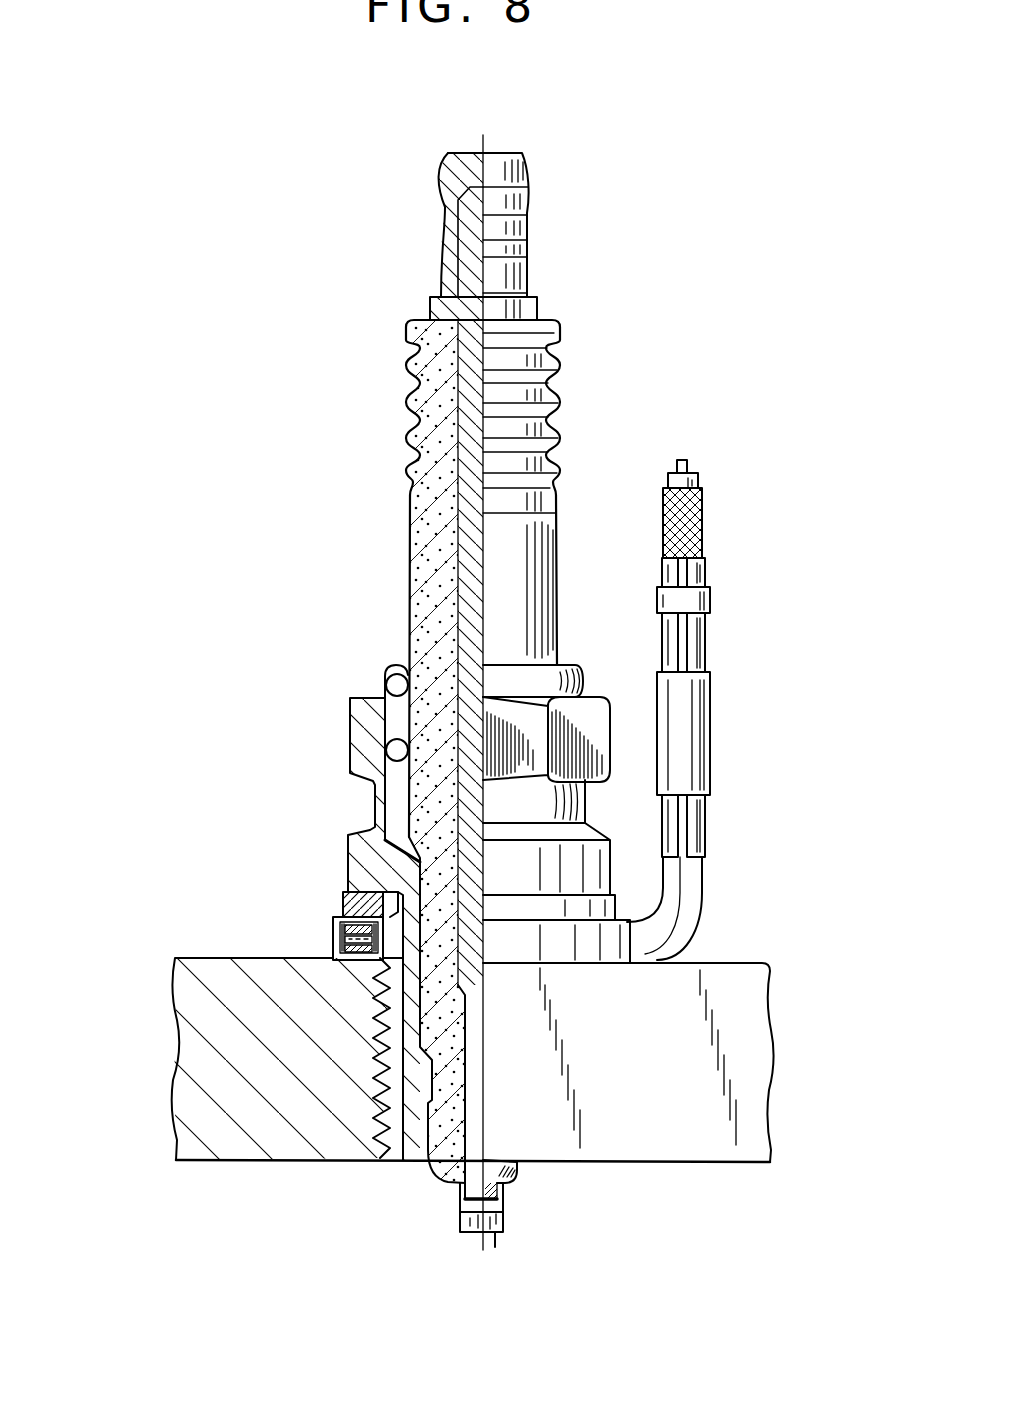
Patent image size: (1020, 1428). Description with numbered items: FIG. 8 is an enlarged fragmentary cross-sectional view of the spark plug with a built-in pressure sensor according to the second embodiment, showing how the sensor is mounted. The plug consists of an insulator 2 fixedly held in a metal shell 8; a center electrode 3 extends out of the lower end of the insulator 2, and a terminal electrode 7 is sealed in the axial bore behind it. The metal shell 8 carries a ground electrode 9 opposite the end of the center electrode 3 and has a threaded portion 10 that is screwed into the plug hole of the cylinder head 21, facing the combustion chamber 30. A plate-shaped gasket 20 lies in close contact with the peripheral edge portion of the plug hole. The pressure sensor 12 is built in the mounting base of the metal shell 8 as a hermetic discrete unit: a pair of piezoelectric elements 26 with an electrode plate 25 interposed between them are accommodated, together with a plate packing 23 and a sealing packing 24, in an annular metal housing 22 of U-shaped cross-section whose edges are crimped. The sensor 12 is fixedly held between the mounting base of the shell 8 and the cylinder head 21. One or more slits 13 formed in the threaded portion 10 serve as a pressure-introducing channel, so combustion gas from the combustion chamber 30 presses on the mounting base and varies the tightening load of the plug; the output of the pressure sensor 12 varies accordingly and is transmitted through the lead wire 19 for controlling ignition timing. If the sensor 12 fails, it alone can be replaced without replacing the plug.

The insulator 2 is at (517, 1168).
The center electrode 3 is at (503, 1197).
The terminal electrode 7 is at (455, 170).
The metal shell 8 is at (367, 707).
The ground electrode 9 is at (495, 1233).
The threaded portion 10 is at (347, 1160).
The pressure sensor 12 is at (231, 864).
The slit 13 is at (402, 1160).
The lead wire 19 is at (702, 510).
The gasket 20 is at (383, 893).
The cylinder head 21 is at (185, 1050).
The metal housing 22 is at (224, 948).
The plate packing 23 is at (345, 905).
The sealing packing 24 is at (338, 963).
The electrode plate 25 is at (333, 938).
The piezoelectric elements 26 is at (333, 930).
The combustion chamber 30 is at (460, 1305).